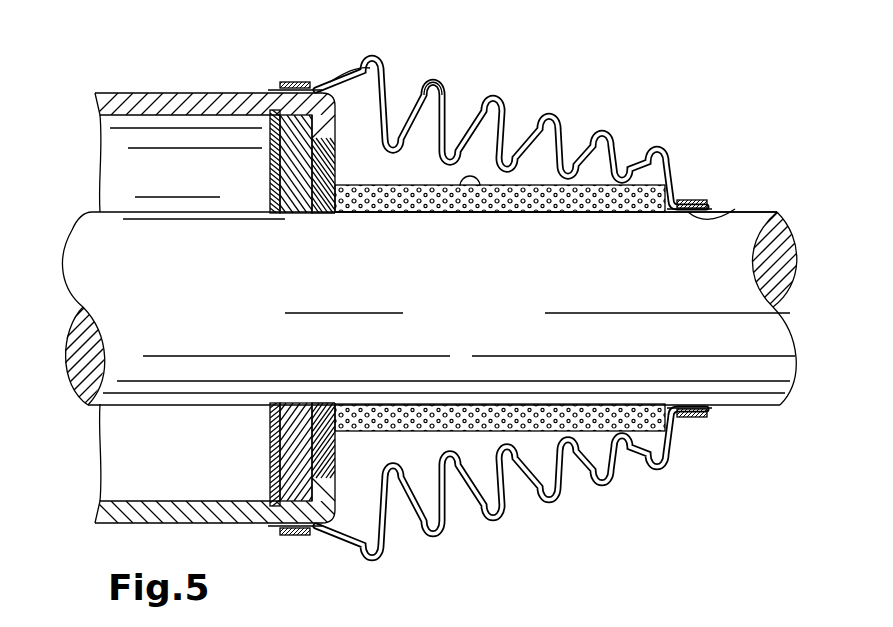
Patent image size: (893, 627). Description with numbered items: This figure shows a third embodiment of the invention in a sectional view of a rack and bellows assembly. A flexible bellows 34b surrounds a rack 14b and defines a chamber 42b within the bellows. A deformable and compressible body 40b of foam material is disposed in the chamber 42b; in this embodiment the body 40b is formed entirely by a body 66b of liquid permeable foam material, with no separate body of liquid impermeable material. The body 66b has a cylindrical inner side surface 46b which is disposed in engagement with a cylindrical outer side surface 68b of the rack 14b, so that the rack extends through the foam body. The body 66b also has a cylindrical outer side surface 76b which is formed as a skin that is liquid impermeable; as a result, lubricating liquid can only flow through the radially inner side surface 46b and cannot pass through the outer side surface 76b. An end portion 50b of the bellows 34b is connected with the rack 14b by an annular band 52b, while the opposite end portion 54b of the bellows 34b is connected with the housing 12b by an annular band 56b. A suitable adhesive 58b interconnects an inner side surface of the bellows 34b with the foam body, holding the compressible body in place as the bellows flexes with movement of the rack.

The housing 12b is at (145, 92).
The rack 14b is at (97, 261).
The flexible bellows 34b is at (548, 110).
The deformable and compressible body 40b is at (585, 188).
The chamber 42b is at (493, 97).
The cylindrical inner side surface 46b is at (558, 213).
The end portion 50b is at (735, 209).
The annular band 52b is at (695, 420).
The opposite end portion 54b is at (280, 92).
The annular band 56b is at (300, 540).
The adhesive 58b is at (347, 70).
The body of liquid permeable foam material 66b is at (430, 210).
The cylindrical outer side surface 68b is at (732, 323).
The cylindrical outer side surface 76b is at (477, 188).